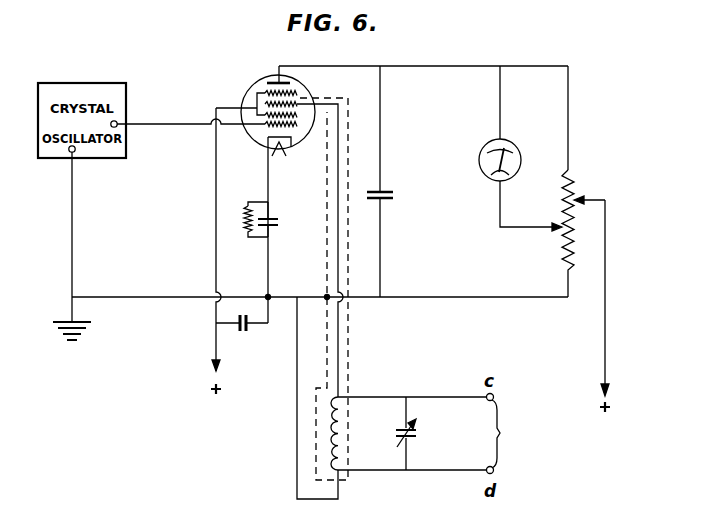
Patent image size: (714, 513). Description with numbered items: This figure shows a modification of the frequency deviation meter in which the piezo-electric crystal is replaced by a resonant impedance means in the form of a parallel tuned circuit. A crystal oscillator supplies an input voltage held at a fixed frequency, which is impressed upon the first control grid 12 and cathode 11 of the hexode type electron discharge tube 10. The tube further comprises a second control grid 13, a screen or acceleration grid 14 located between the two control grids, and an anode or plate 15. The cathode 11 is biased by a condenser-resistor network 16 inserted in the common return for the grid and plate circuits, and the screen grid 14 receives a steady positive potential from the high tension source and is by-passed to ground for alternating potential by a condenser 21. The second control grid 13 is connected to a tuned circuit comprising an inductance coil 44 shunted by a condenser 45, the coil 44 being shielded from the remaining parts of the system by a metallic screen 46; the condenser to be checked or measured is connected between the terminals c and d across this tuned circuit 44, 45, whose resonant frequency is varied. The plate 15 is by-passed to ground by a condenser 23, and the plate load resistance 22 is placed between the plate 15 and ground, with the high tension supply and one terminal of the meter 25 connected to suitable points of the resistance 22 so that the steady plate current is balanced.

The hexode type electron discharge tube 10 is at (305, 90).
The cathode 11 is at (291, 140).
The first control grid 12 is at (264, 127).
The second control grid 13 is at (292, 104).
The screen or acceleration grid 14 is at (265, 93).
The anode or plate 15 is at (275, 82).
The condenser-resistor network 16 is at (259, 212).
The condenser 21 is at (246, 331).
The load resistor 22 is at (571, 196).
The condenser 23 is at (385, 196).
The meter 25 is at (520, 160).
The inductance coil 44 is at (343, 429).
The condenser 45 is at (410, 441).
The metallic screen 46 is at (350, 358).